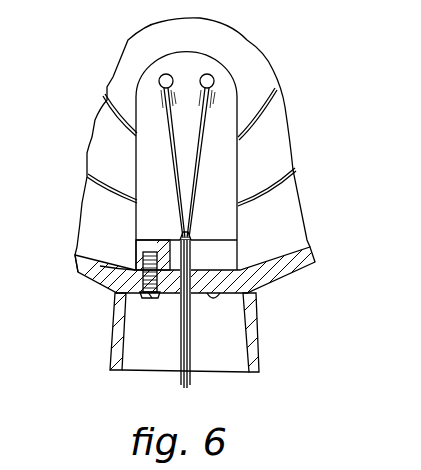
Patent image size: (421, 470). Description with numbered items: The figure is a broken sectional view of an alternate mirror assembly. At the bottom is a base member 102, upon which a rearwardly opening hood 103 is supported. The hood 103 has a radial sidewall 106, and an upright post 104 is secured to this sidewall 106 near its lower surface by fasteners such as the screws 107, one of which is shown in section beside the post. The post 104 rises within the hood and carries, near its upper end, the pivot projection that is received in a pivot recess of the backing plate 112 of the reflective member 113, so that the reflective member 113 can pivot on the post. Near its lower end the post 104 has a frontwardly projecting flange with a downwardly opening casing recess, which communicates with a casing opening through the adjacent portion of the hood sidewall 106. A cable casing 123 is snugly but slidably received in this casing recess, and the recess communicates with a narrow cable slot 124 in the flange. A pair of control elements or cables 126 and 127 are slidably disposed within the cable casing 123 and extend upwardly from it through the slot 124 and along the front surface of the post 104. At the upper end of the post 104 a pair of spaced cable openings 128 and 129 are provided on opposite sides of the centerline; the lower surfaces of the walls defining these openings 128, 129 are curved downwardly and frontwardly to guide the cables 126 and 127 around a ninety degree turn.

The base member 102 is at (110, 340).
The hood 103 is at (78, 280).
The post 104 is at (223, 163).
The radial sidewall 106 is at (300, 262).
The screws 107 is at (144, 298).
The backing plate 112 is at (295, 195).
The reflective member 113 is at (287, 104).
The cable casing 123 is at (180, 352).
The cable slot 124 is at (195, 248).
The control element or cable 126 is at (173, 166).
The control element or cable 127 is at (200, 166).
The cable opening 128 is at (158, 78).
The cable opening 129 is at (203, 78).